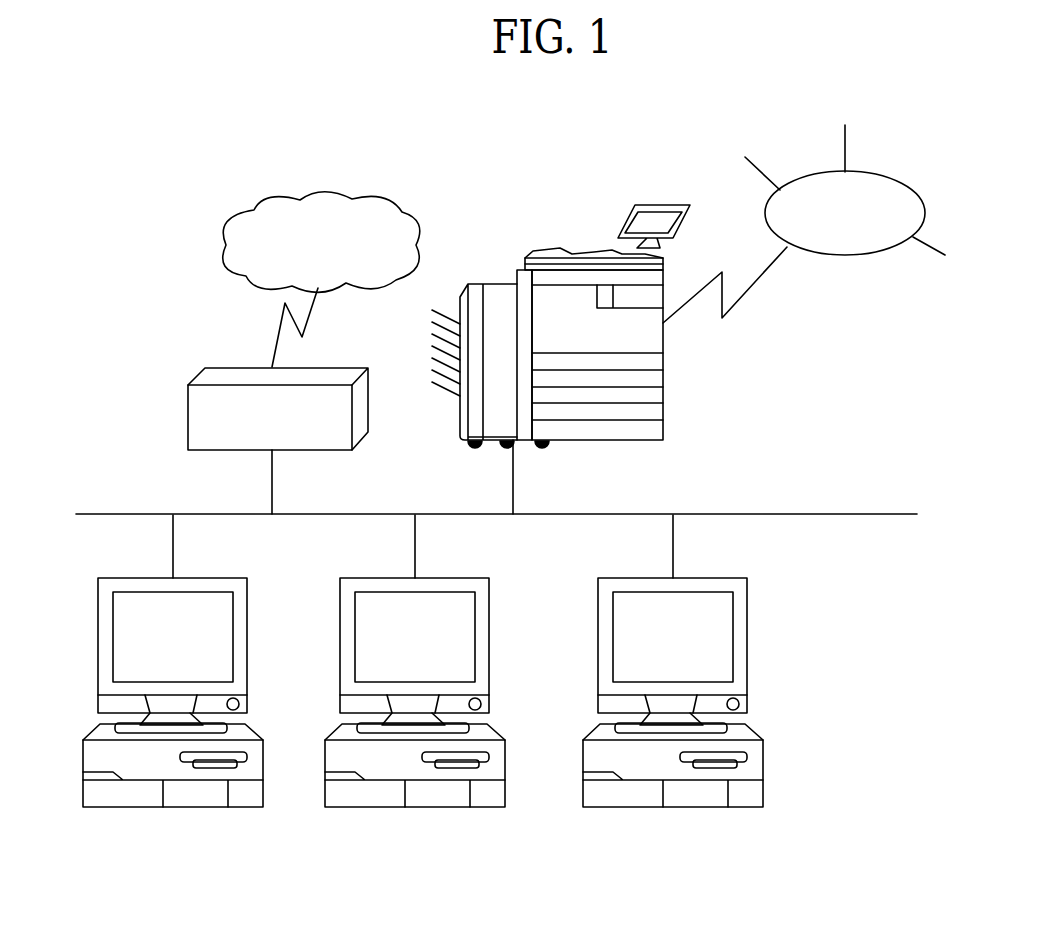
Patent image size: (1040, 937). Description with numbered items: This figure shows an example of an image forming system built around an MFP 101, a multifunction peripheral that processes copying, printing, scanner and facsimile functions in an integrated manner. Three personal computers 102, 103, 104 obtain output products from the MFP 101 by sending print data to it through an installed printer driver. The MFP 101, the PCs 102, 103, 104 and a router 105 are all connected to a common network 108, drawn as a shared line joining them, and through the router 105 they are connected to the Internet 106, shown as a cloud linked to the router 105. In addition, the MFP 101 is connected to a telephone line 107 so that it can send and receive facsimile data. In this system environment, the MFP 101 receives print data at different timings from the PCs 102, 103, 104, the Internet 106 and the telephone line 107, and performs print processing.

The MFP 101 is at (547, 247).
The personal computer 102 is at (173, 808).
The personal computer 103 is at (415, 808).
The personal computer 104 is at (673, 808).
The router 105 is at (188, 418).
The Internet 106 is at (285, 190).
The telephone line 107 is at (923, 210).
The network 108 is at (861, 513).